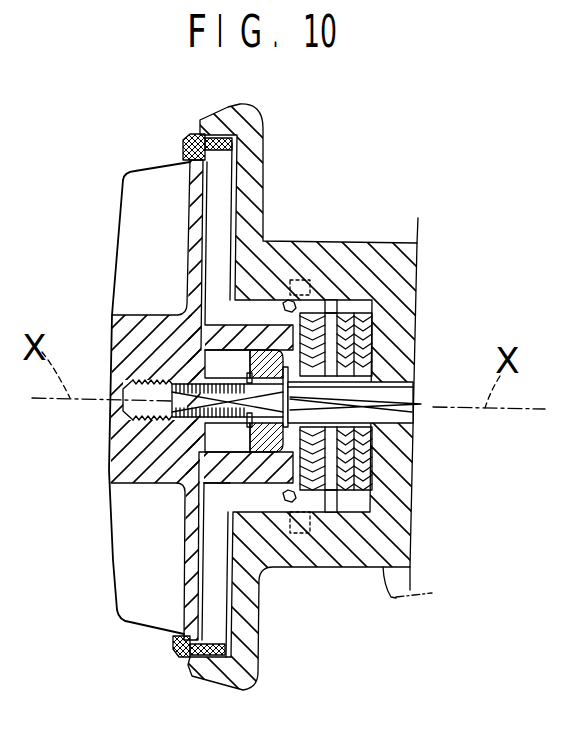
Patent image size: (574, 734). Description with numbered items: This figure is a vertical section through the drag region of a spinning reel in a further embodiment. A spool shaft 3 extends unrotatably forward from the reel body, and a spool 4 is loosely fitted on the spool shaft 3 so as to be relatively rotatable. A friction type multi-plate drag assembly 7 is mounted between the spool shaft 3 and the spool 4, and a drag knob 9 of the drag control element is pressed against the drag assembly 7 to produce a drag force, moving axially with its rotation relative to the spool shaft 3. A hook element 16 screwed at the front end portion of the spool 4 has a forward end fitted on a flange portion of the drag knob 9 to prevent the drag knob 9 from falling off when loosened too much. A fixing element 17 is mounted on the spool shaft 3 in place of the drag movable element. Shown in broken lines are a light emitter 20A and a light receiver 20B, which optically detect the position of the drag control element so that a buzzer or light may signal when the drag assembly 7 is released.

The spool shaft 3 is at (413, 448).
The spool 4 is at (407, 435).
The friction type multi-plate drag assembly 7 is at (363, 299).
The drag knob 9 is at (120, 256).
The hook element 16 is at (182, 152).
The fixing element 17 is at (226, 483).
The light emitter 20A is at (308, 281).
The light receiver 20B is at (308, 535).